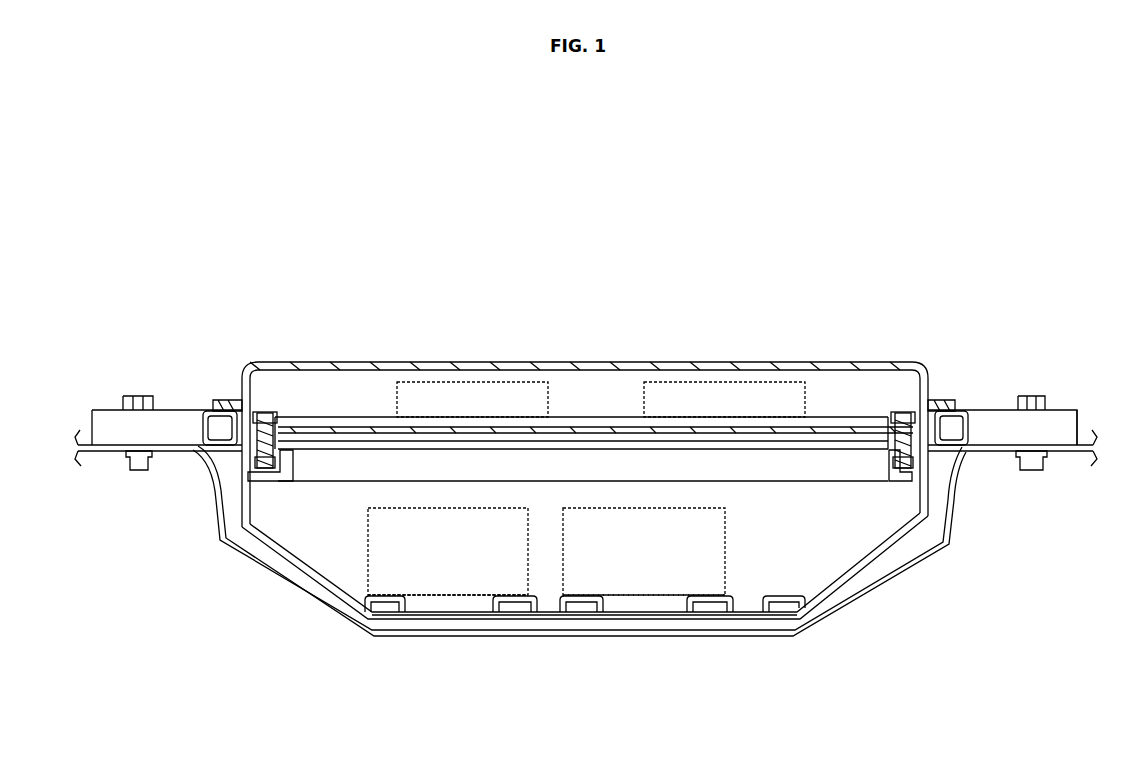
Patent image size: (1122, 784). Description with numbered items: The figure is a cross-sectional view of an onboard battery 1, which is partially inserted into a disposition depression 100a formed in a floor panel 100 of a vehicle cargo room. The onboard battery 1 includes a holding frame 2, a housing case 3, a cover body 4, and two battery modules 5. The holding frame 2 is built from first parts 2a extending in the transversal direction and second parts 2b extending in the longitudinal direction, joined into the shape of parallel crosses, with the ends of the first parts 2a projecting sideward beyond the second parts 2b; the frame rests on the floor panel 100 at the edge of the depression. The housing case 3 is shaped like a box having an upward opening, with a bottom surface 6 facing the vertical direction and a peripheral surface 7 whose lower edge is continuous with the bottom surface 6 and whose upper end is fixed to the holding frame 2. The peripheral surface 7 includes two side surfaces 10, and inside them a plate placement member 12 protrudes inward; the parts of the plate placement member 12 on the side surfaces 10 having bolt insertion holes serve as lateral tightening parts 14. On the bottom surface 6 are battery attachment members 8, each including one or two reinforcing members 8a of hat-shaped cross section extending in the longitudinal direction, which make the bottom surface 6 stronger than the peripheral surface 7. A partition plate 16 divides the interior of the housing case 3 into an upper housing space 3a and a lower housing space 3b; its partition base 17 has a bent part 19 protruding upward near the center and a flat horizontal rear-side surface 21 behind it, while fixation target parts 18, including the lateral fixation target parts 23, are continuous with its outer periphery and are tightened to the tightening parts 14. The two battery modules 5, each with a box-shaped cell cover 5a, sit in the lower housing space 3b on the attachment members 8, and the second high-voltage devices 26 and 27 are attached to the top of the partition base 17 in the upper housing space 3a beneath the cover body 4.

The onboard battery 1 is at (992, 238).
The holding frame 2 is at (586, 422).
The first part 2a is at (1063, 410).
The second part 2b is at (195, 418).
The housing case 3 is at (907, 562).
The upper housing space 3a is at (606, 397).
The lower housing space 3b is at (826, 525).
The cover body 4 is at (712, 362).
The battery module 5 is at (436, 592).
The cell cover 5a is at (454, 592).
The bottom surface 6 is at (770, 603).
The peripheral surface 7 is at (938, 492).
The battery attachment member 8 is at (828, 612).
The reinforcing member 8a is at (515, 603).
The side surface 10 is at (247, 478).
The plate placement member 12 is at (290, 522).
The lateral tightening part 14 is at (255, 468).
The partition plate 16 is at (325, 417).
The partition base 17 is at (360, 417).
The fixation target part 18 is at (283, 417).
The bent part 19 is at (557, 417).
The rear-side surface 21 is at (828, 417).
The lateral fixation target part 23 is at (602, 370).
The second high-voltage device 26 is at (473, 392).
The second high-voltage device 27 is at (772, 393).
The floor panel 100 is at (1063, 451).
The disposition depression 100a is at (933, 560).